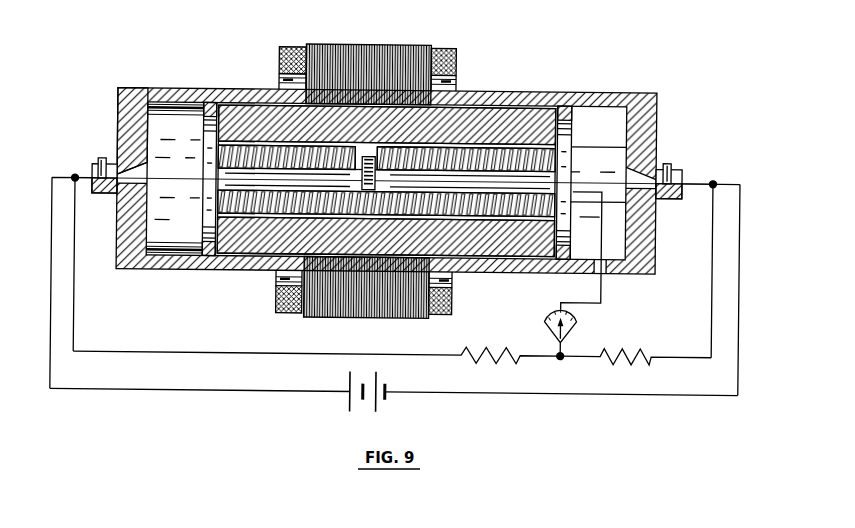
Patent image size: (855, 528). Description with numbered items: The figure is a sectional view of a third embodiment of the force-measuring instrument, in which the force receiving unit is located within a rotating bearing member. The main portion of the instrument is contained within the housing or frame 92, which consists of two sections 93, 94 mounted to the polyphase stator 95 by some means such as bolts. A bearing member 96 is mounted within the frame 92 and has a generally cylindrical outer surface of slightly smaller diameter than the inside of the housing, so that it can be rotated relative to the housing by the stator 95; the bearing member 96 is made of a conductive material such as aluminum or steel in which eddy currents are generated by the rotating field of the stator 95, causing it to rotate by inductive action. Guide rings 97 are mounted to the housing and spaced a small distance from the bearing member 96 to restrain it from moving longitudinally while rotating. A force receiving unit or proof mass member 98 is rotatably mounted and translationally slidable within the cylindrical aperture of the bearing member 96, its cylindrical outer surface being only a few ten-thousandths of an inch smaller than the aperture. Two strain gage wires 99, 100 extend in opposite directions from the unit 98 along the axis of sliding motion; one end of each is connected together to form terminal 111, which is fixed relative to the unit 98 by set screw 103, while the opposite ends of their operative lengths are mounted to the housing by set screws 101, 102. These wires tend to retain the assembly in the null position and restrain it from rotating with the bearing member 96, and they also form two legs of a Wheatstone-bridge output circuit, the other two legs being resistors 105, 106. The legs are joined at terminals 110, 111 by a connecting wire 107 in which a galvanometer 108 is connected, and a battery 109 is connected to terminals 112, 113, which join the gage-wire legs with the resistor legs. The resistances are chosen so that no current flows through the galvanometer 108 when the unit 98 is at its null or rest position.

The housing or frame 92 is at (233, 280).
The frame section 93 is at (523, 92).
The frame section 94 is at (152, 90).
The polyphase stator 95 is at (411, 44).
The bearing member 96 is at (497, 120).
The guide rings 97 is at (214, 90).
The force receiving unit or proof mass member 98 is at (488, 205).
The strain gage wire 99 is at (585, 182).
The strain gage wire 100 is at (183, 181).
The set screw 101 is at (671, 164).
The set screw 102 is at (100, 166).
The set screw 103 is at (372, 168).
The resistor 105 is at (620, 352).
The resistor 106 is at (486, 352).
The connecting wire 107 is at (585, 302).
The galvanometer 108 is at (572, 330).
The battery 109 is at (390, 388).
The terminal 110 is at (565, 360).
The terminal 111 is at (272, 272).
The terminal 112 is at (714, 180).
The terminal 113 is at (73, 178).